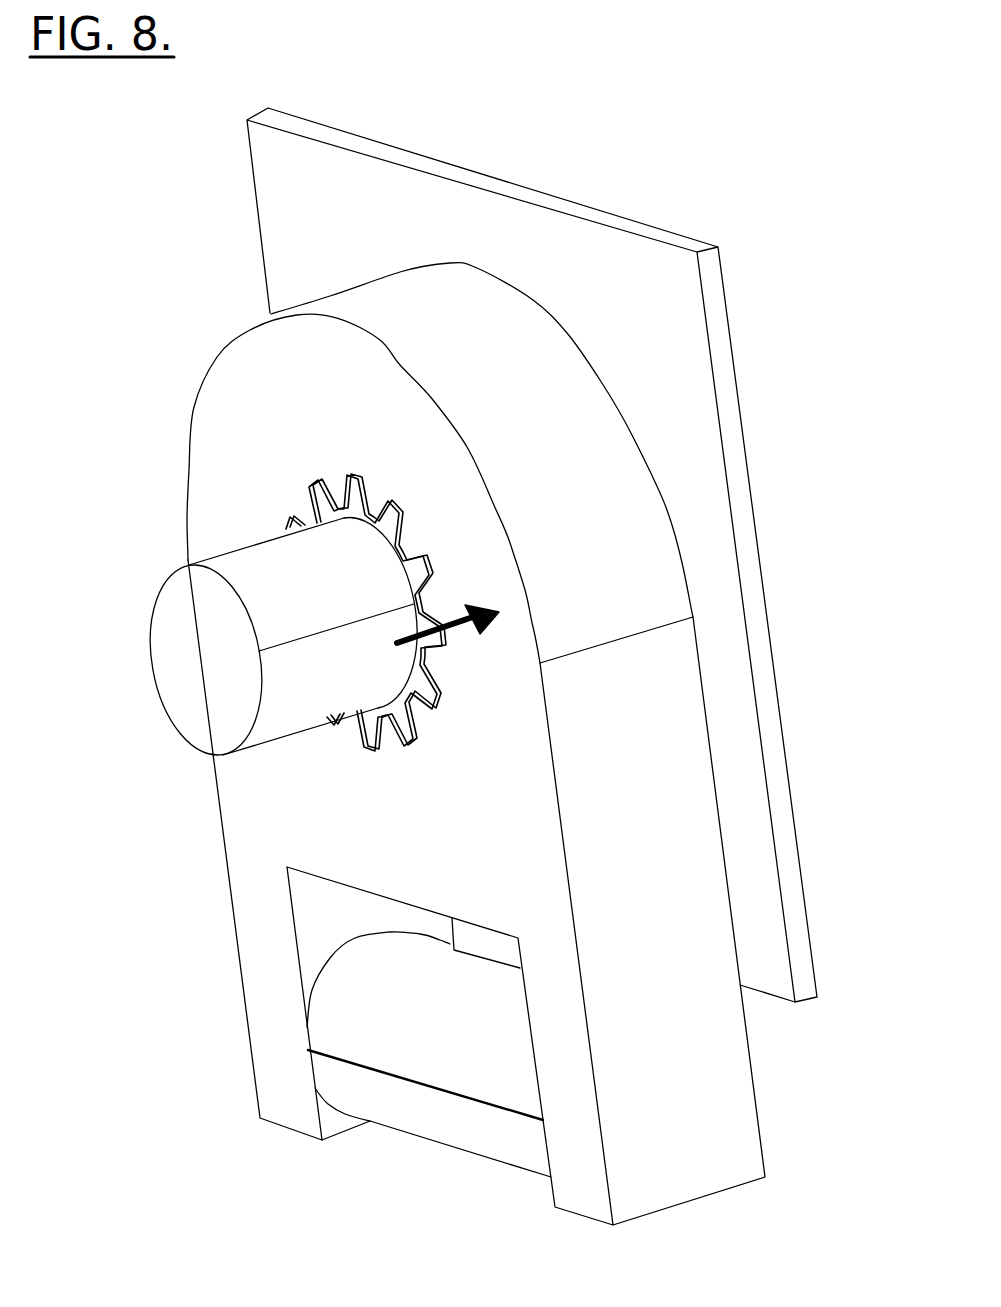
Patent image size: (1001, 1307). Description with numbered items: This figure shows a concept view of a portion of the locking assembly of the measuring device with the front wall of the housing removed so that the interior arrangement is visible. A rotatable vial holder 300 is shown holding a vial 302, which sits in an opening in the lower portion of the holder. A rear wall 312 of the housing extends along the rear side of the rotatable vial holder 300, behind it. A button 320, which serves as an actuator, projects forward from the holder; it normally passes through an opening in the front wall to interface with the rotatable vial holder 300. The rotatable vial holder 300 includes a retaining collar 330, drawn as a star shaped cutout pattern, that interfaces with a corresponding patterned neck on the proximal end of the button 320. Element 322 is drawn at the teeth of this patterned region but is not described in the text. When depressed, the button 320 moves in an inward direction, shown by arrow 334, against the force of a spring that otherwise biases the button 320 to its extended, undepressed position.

The rotatable vial holder 300 is at (515, 744).
The vial 302 is at (360, 1073).
The rear wall 312 is at (690, 315).
The button 320 is at (207, 703).
The gear teeth 322 is at (320, 508).
The retaining collar 330 is at (264, 506).
The arrow 334 is at (465, 615).